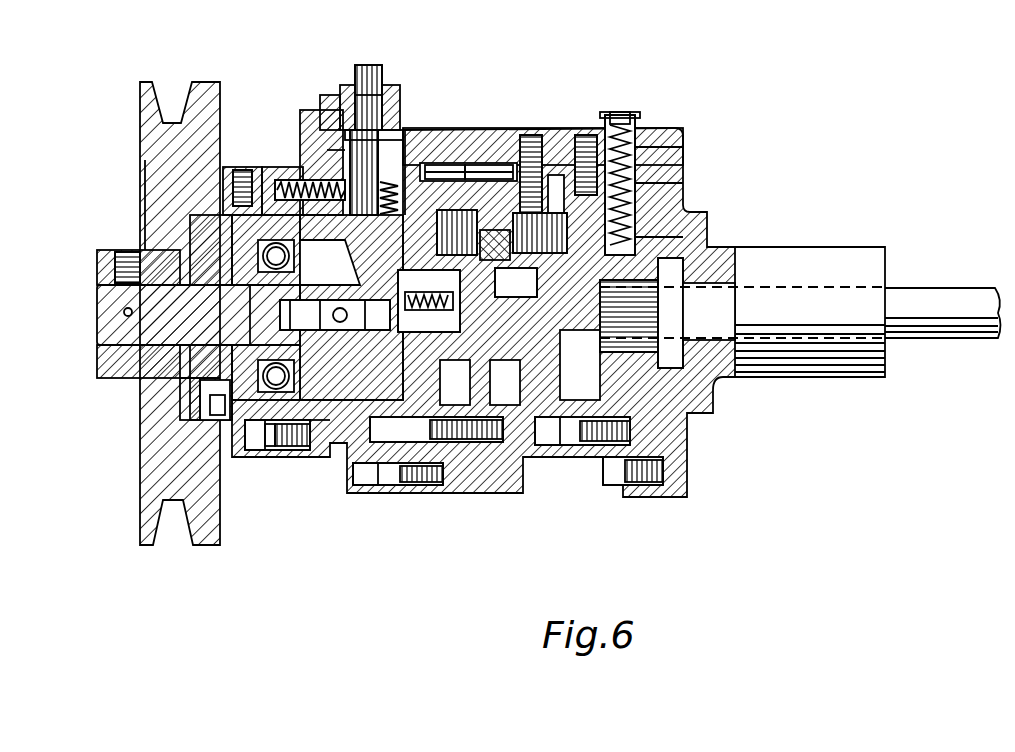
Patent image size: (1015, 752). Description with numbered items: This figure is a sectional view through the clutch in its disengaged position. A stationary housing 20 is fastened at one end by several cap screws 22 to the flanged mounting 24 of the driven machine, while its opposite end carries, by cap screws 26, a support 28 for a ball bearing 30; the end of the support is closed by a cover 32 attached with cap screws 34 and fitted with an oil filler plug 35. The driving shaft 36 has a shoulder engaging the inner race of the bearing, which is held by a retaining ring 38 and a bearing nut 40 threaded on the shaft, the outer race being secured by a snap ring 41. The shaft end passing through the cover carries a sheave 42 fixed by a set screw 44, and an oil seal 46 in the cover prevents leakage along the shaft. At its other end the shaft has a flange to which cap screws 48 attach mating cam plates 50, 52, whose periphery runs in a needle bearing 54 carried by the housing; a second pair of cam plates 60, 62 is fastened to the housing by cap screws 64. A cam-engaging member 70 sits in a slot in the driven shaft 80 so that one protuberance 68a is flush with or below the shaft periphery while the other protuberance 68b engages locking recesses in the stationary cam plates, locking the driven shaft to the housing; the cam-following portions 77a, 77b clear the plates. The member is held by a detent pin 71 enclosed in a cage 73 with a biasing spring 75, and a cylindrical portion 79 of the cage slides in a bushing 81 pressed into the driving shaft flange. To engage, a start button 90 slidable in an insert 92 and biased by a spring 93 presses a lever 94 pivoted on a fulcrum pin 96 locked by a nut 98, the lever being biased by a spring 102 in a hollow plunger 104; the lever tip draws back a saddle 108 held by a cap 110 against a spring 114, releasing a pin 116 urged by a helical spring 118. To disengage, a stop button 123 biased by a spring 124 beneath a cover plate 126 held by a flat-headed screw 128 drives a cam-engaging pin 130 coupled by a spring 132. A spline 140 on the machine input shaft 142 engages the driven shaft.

The housing 20 is at (505, 140).
The cap screws 22 is at (608, 485).
The flanged mounting 24 is at (822, 258).
The cap screws 26 is at (380, 486).
The bearing support 28 is at (328, 458).
The ball bearing 30 is at (283, 450).
The cover 32 is at (268, 452).
The cap screws 34 is at (256, 450).
The oil filler plug 35 is at (237, 193).
The driving shaft 36 is at (96, 335).
The retaining ring 38 is at (245, 418).
The bearing nut 40 is at (222, 387).
The snap ring 41 is at (240, 422).
The sheave 42 is at (200, 545).
The set screw 44 is at (124, 254).
The oil seal 46 is at (182, 372).
The cap screws 48 is at (392, 486).
The cam plate 50 is at (432, 165).
The cam plate 52 is at (490, 166).
The needle bearing 54 is at (465, 165).
The cam plate 60 is at (580, 135).
The cam plate 62 is at (531, 137).
The cap screws 64 is at (600, 445).
The protuberance 68a is at (516, 282).
The protuberance 68b is at (582, 445).
The cam-engaging member 70 is at (540, 315).
The detent pin 71 is at (445, 310).
The cage 73 is at (413, 343).
The biasing spring 75 is at (352, 375).
The cam-engaging portion 77a is at (470, 442).
The cam-engaging portion 77b is at (556, 178).
The cylindrical portion 79 is at (231, 315).
The driven shaft 80 is at (655, 390).
The bushing 81 is at (320, 330).
The start button 90 is at (370, 68).
The insert 92 is at (393, 90).
The spring 93 is at (410, 130).
The lever 94 is at (327, 150).
The fulcrum pin 96 is at (358, 105).
The nut 98 is at (327, 95).
The spring 102 is at (287, 180).
The hollow plunger 104 is at (297, 180).
The saddle 108 is at (261, 169).
The cap 110 is at (372, 165).
The spring 114 is at (330, 266).
The pin 116 is at (365, 185).
The helical spring 118 is at (380, 150).
The stop button 123 is at (612, 120).
The spring 124 is at (636, 147).
The cover plate 126 is at (642, 124).
The flat-headed screw 128 is at (618, 113).
The cam-engaging pin 130 is at (632, 237).
The spring 132 is at (637, 183).
The spline 140 is at (652, 280).
The machine input shaft 142 is at (928, 300).